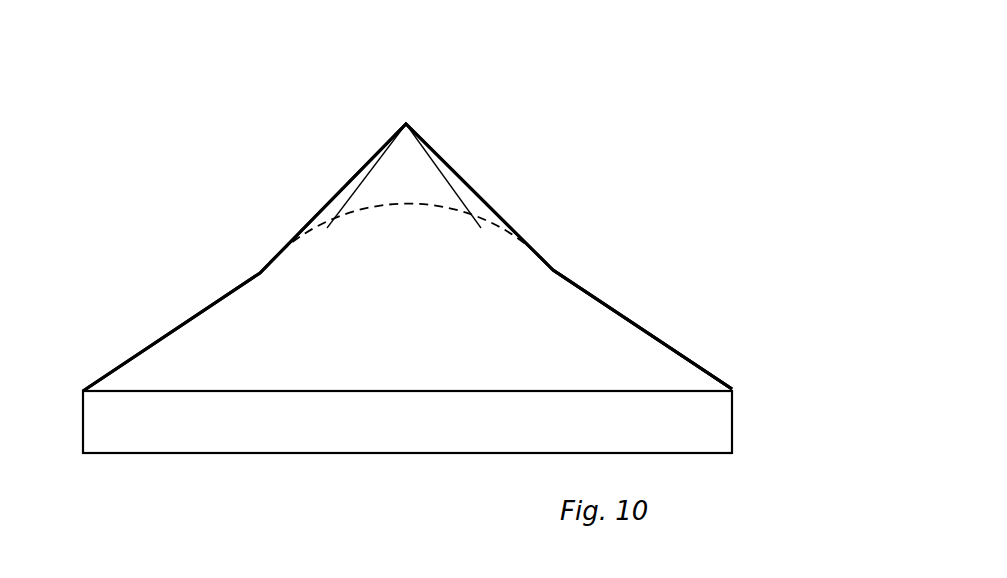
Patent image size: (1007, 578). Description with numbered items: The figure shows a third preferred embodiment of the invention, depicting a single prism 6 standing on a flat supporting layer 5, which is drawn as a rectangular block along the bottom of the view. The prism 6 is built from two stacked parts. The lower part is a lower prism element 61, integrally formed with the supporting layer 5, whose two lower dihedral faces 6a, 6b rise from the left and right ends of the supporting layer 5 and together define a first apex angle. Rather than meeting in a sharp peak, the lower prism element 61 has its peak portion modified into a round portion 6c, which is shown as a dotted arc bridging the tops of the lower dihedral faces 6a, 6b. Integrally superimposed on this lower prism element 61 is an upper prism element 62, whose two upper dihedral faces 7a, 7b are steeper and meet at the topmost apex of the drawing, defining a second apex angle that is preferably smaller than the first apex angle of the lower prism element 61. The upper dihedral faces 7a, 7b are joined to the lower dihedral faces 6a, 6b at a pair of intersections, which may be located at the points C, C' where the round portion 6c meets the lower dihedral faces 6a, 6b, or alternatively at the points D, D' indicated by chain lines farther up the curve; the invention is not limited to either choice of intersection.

The supporting layer 5 is at (247, 432).
The prism 6 is at (723, 100).
The lower dihedral face 6a is at (188, 320).
The lower dihedral face 6b is at (613, 295).
The round portion 6c is at (307, 243).
The upper dihedral face 7a is at (340, 197).
The upper dihedral face 7b is at (461, 179).
The lower prism element 61 is at (640, 352).
The upper prism element 62 is at (452, 165).
The intersection C is at (214, 231).
The intersection C' is at (589, 228).
The intersection D is at (349, 284).
The intersection D' is at (470, 281).